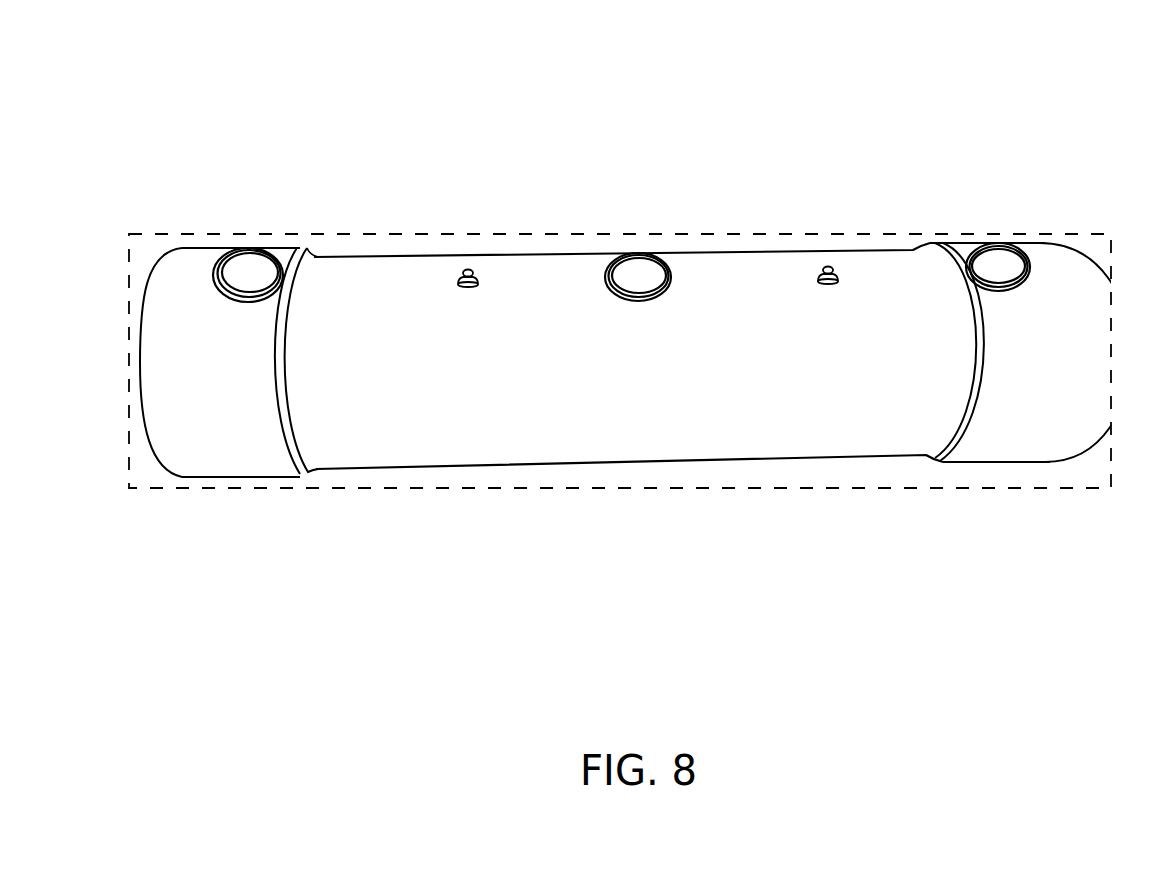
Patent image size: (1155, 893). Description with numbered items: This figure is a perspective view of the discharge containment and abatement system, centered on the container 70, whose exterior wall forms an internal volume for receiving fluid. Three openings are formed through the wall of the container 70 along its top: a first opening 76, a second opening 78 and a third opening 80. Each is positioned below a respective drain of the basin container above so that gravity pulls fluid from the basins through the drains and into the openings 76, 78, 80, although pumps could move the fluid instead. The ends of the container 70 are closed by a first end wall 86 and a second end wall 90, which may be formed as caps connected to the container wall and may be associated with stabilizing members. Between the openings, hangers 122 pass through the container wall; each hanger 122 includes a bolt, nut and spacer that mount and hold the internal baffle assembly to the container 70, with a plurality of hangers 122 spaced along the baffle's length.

The container 70 is at (570, 435).
The first opening 76 is at (255, 267).
The second opening 78 is at (647, 273).
The third opening 80 is at (1007, 260).
The first end wall 86 is at (175, 280).
The second end wall 90 is at (1082, 292).
The hanger 122 is at (466, 275).